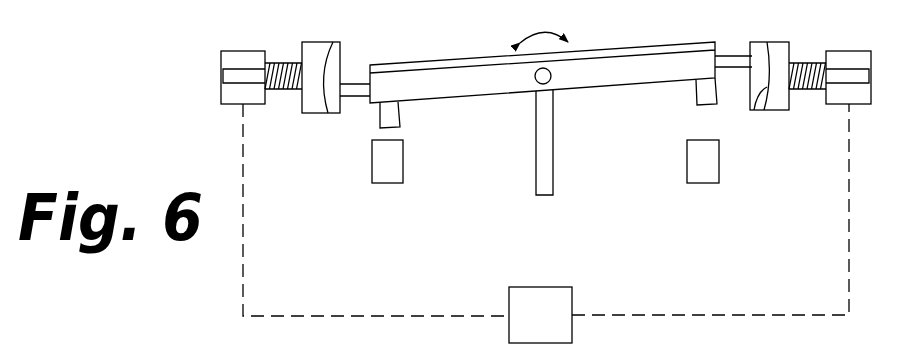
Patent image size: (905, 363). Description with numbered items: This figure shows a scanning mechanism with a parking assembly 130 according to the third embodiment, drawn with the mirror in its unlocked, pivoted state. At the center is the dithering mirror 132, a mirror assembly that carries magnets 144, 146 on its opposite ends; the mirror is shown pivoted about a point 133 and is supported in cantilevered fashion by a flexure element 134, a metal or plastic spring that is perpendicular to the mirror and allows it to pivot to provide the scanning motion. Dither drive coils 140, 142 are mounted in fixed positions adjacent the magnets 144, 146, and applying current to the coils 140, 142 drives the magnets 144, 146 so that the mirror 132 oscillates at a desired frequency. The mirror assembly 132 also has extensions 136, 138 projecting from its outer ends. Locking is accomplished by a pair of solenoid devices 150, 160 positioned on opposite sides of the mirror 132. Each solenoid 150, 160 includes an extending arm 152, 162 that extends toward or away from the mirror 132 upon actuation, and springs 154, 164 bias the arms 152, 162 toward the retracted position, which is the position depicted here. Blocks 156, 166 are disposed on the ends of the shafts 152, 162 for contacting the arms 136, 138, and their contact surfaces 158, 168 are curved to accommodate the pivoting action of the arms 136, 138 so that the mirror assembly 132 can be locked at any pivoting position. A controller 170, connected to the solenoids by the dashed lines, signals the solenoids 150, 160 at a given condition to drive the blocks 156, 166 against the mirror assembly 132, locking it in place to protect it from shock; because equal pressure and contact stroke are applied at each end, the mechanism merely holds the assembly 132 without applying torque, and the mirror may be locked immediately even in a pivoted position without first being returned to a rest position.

The parking assembly 130 is at (193, 44).
The dithering mirror 132 is at (631, 47).
The pivot 133 is at (548, 77).
The flexure element 134 is at (548, 167).
The extension 136 is at (733, 55).
The extension 138 is at (352, 83).
The dither drive coil 140 is at (710, 168).
The dither drive coil 142 is at (387, 172).
The magnet 144 is at (703, 92).
The magnet 146 is at (392, 117).
The solenoid device 150 is at (838, 50).
The extending arm 152 is at (840, 78).
The spring 154 is at (815, 89).
The block 156 is at (774, 50).
The contact surface 158 is at (755, 112).
The solenoid device 160 is at (221, 79).
The extending arm 162 is at (238, 77).
The spring 164 is at (285, 65).
The block 166 is at (314, 102).
The contact surface 168 is at (333, 45).
The controller 170 is at (528, 298).